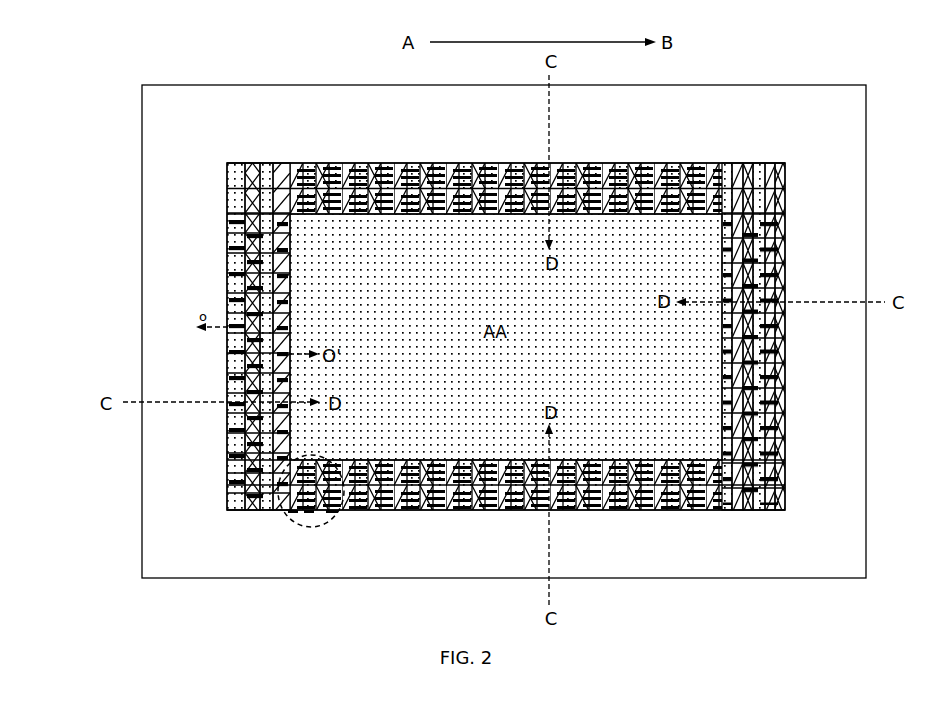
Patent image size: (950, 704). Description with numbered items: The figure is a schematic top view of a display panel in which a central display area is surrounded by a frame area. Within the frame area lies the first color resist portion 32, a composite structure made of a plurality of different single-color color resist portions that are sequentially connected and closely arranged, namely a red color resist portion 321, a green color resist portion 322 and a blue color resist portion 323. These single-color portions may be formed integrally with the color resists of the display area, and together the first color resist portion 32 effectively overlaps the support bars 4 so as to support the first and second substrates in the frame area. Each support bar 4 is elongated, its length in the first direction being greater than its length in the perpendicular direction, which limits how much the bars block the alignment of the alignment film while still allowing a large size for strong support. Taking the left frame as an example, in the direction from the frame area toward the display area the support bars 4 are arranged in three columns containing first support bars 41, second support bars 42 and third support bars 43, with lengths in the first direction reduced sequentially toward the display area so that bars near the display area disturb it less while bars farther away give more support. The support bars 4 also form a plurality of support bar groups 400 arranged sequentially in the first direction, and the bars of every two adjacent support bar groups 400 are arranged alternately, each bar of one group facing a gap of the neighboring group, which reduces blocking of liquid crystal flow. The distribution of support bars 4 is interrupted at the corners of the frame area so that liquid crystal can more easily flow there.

The first color resist portion 32 is at (236, 268).
The red color resist portion 321 is at (233, 177).
The green color resist portion 322 is at (244, 177).
The blue color resist portion 323 is at (260, 176).
The support bar 4 is at (155, 356).
The first support bar 41 is at (286, 250).
The second support bar 42 is at (248, 237).
The third support bar 43 is at (229, 220).
The support bar group 400 is at (295, 512).